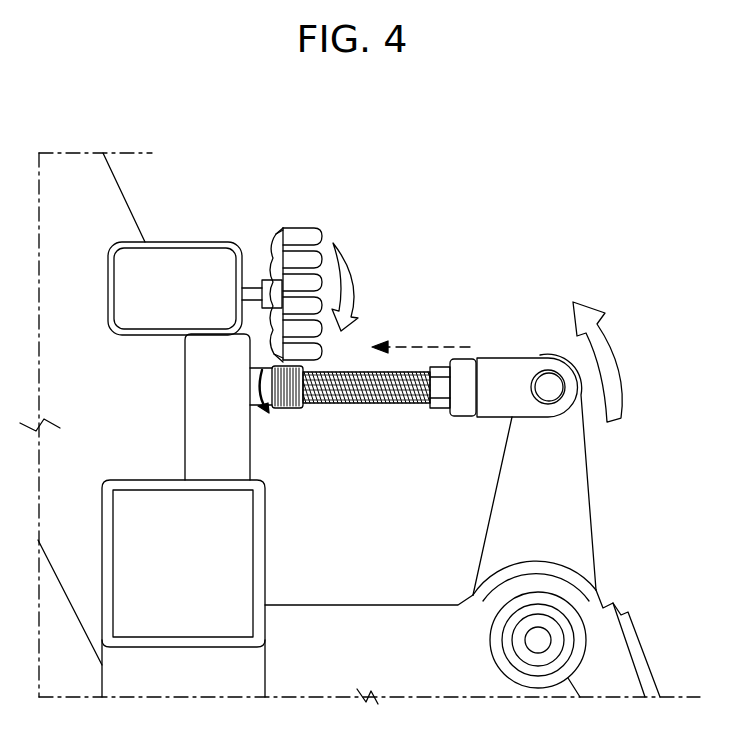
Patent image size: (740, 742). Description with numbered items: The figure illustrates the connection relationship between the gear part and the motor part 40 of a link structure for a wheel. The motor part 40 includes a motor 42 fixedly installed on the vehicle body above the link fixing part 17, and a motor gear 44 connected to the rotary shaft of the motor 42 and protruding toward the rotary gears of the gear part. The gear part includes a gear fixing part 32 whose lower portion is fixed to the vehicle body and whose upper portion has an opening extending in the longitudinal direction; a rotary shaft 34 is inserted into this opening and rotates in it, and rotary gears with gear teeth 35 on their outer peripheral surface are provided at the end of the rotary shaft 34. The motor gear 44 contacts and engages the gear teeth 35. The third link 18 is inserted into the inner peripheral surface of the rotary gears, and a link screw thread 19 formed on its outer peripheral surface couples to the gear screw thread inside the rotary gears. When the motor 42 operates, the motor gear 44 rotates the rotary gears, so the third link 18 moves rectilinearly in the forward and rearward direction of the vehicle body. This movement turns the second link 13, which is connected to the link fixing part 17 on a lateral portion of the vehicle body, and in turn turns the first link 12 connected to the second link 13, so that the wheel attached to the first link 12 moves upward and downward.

The first link 12 is at (614, 666).
The second link 13 is at (553, 497).
The link fixing part 17 is at (372, 605).
The third link 18 is at (505, 366).
The link screw thread 19 is at (348, 370).
The gear fixing part 32 is at (248, 470).
The rotary shaft 34 is at (258, 408).
The gear teeth 35 is at (292, 408).
The motor part 40 is at (232, 229).
The motor 42 is at (176, 242).
The motor gear 44 is at (305, 235).